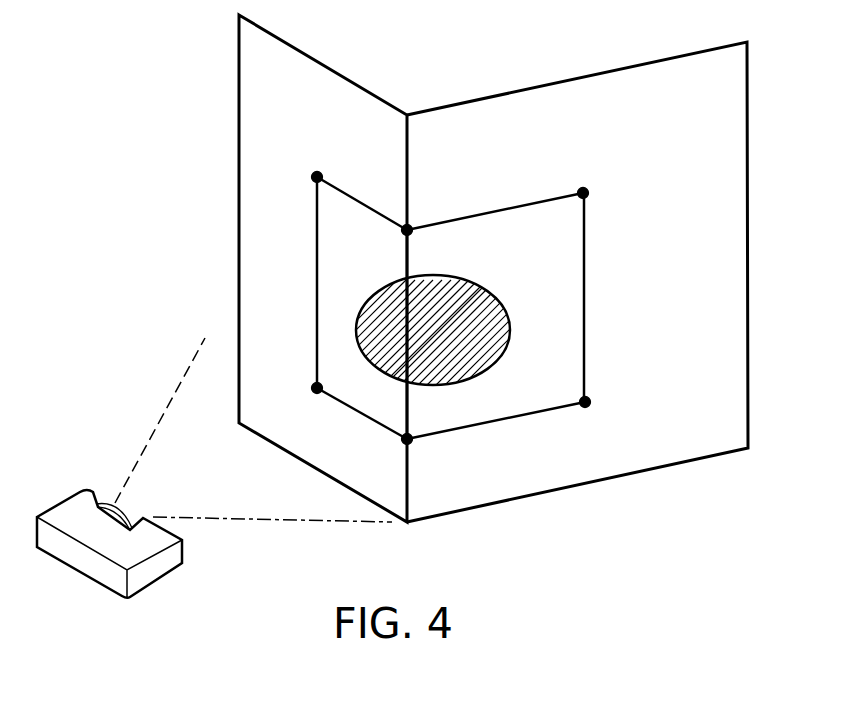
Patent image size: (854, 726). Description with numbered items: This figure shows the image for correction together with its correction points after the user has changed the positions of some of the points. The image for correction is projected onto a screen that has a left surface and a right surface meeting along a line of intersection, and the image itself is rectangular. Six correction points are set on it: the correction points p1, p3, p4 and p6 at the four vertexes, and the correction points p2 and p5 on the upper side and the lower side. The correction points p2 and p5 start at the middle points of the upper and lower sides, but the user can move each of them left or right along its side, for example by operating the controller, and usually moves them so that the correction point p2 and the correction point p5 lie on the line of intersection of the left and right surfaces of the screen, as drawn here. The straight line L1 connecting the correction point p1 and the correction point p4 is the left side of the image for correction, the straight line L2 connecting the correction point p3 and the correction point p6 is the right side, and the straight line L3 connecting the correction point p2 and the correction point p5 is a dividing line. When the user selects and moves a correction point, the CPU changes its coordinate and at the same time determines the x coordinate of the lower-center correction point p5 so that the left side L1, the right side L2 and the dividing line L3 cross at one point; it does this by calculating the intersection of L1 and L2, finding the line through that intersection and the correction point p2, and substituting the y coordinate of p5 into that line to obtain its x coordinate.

The correction point p1 is at (317, 172).
The correction point p2 is at (409, 228).
The correction point p3 is at (583, 190).
The correction point p4 is at (317, 390).
The correction point p5 is at (409, 440).
The correction point p6 is at (585, 404).
The left side L1 is at (316, 278).
The right side L2 is at (586, 297).
The dividing line L3 is at (409, 266).